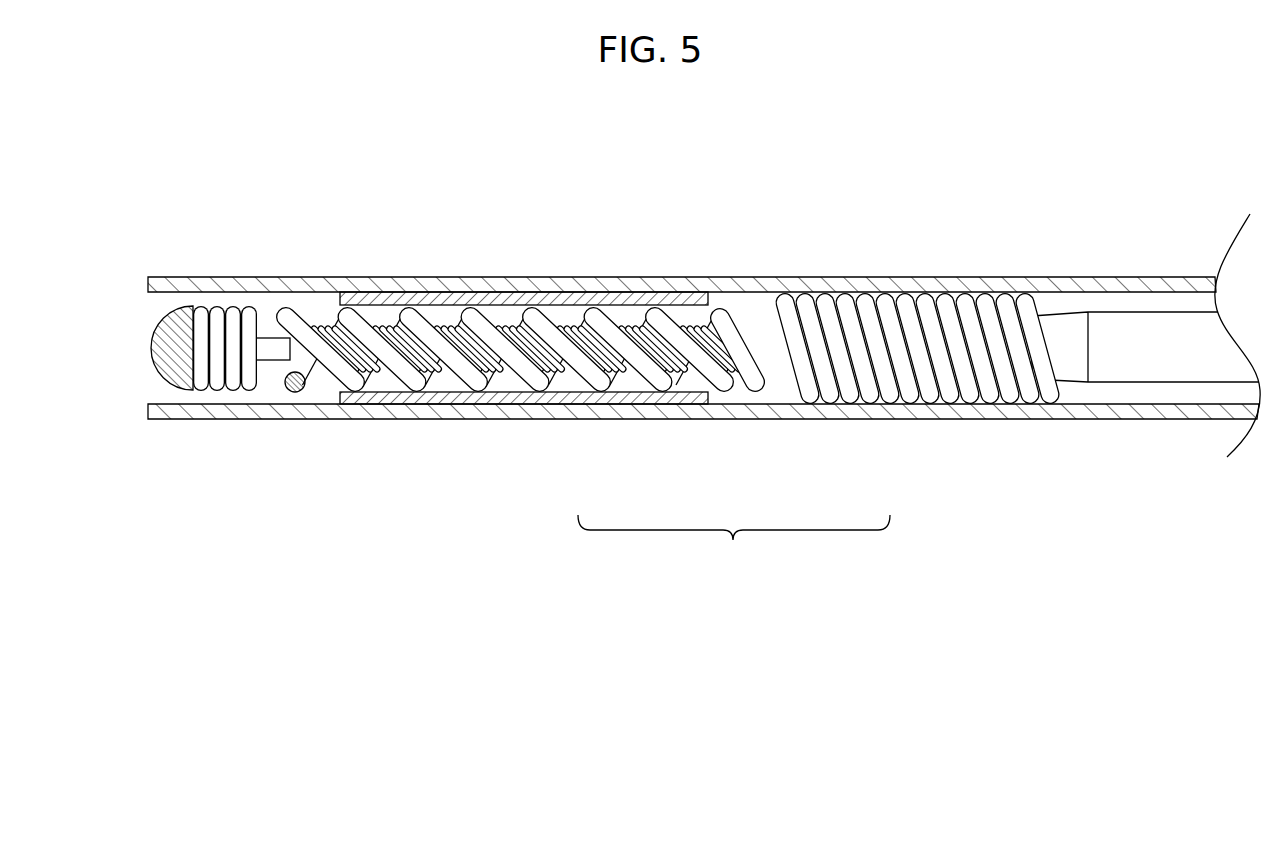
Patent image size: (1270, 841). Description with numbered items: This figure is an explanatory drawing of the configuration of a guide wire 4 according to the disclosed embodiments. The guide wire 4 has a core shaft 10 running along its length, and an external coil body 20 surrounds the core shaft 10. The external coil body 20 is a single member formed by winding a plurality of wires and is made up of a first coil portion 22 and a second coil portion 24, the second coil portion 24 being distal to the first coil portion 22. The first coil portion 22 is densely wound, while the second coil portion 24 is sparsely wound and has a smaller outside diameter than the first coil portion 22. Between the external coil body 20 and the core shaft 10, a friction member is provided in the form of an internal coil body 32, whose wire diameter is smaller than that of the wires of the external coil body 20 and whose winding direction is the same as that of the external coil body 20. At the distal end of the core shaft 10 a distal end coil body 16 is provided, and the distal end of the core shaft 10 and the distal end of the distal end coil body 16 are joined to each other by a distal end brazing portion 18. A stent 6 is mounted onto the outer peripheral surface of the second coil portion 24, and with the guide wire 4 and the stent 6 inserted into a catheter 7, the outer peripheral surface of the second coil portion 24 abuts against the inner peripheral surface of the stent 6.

The guide wire 4 is at (1125, 307).
The stent 6 is at (490, 398).
The catheter 7 is at (575, 278).
The core shaft 10 is at (1140, 375).
The distal end coil body 16 is at (221, 313).
The distal end brazing portion 18 is at (163, 377).
The external coil body 20 is at (734, 545).
The first coil portion 22 is at (866, 395).
The second coil portion 24 is at (596, 373).
The internal coil body 32 is at (433, 300).